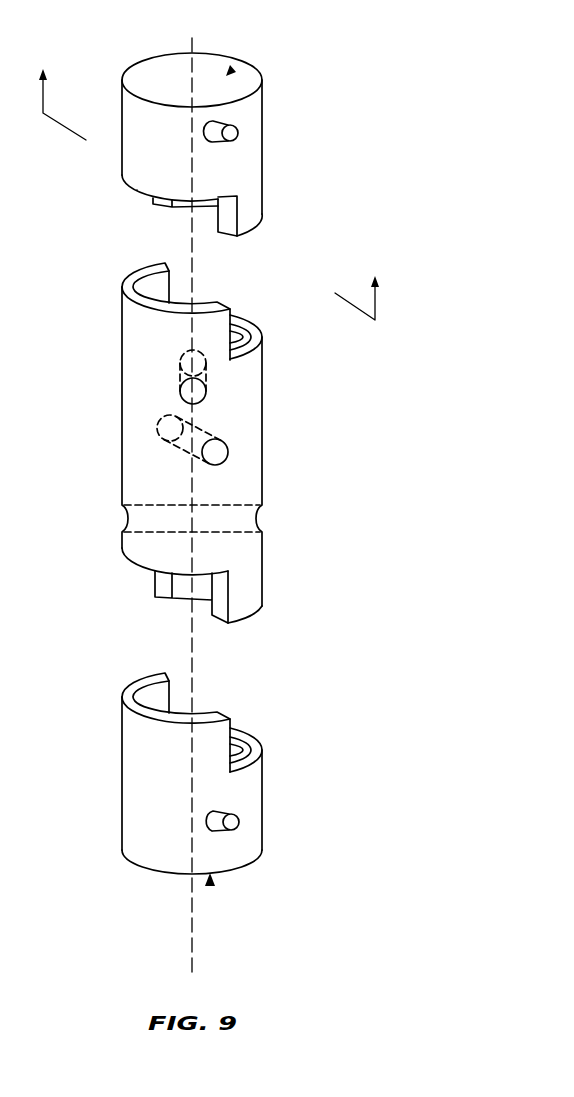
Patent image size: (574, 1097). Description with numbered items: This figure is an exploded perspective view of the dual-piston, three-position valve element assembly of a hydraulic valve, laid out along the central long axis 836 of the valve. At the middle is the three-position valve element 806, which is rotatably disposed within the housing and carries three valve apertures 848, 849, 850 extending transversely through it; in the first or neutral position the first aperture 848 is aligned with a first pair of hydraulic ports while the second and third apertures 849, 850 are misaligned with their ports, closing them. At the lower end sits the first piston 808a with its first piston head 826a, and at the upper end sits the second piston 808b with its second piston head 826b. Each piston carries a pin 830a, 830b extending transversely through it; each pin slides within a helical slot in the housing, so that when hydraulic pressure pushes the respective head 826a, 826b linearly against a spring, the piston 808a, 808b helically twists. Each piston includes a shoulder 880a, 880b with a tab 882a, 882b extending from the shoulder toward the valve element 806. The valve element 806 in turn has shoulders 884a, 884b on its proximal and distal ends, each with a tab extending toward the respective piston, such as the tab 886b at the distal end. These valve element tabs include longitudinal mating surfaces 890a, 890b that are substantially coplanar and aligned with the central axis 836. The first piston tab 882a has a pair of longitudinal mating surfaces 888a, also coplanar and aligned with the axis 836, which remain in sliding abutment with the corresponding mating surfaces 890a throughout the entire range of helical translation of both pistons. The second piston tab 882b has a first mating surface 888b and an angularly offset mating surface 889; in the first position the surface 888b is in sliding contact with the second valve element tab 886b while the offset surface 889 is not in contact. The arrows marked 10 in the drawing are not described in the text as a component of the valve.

The surgical instrument / device 10 is at (211, 184).
The three-position valve element 806 is at (245, 422).
The first piston 808a is at (142, 793).
The second piston 808b is at (243, 168).
The first piston head 826a is at (212, 884).
The second piston head 826b is at (232, 69).
The pin 830a is at (239, 822).
The pin 830b is at (238, 134).
The long axis 836 is at (190, 44).
The first valve aperture 848 is at (228, 453).
The second valve aperture 849 is at (233, 523).
The third valve aperture 850 is at (206, 393).
The shoulder 880a is at (262, 746).
The shoulder 880b is at (137, 190).
The tab 882a is at (132, 692).
The tab 882b is at (239, 236).
The shoulder 884a is at (145, 568).
The shoulder 884b is at (262, 334).
The tab 886b is at (78, 258).
The longitudinal mating surfaces 888a is at (231, 726).
The longitudinal mating surface 888b is at (166, 203).
The angularly offset mating surface 889 is at (231, 211).
The longitudinal mating surfaces 890a is at (218, 610).
The longitudinal mating surfaces 890b is at (232, 311).